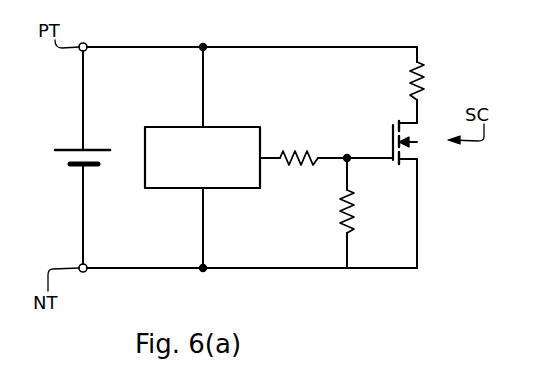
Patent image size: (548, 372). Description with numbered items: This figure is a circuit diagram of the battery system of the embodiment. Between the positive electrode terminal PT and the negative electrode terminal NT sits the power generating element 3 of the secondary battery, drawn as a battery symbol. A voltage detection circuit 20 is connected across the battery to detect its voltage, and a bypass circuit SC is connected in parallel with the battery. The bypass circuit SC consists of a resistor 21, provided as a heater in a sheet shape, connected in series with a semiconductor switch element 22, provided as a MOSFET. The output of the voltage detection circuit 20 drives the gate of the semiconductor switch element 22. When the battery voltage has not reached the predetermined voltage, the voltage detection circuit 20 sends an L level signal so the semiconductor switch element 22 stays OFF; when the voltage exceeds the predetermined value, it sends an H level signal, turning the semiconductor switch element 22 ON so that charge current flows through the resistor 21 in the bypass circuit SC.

The power generating element 3 is at (80, 166).
The voltage detection circuit 20 is at (242, 126).
The resistor 21 is at (410, 80).
The semiconductor switch element 22 is at (393, 140).